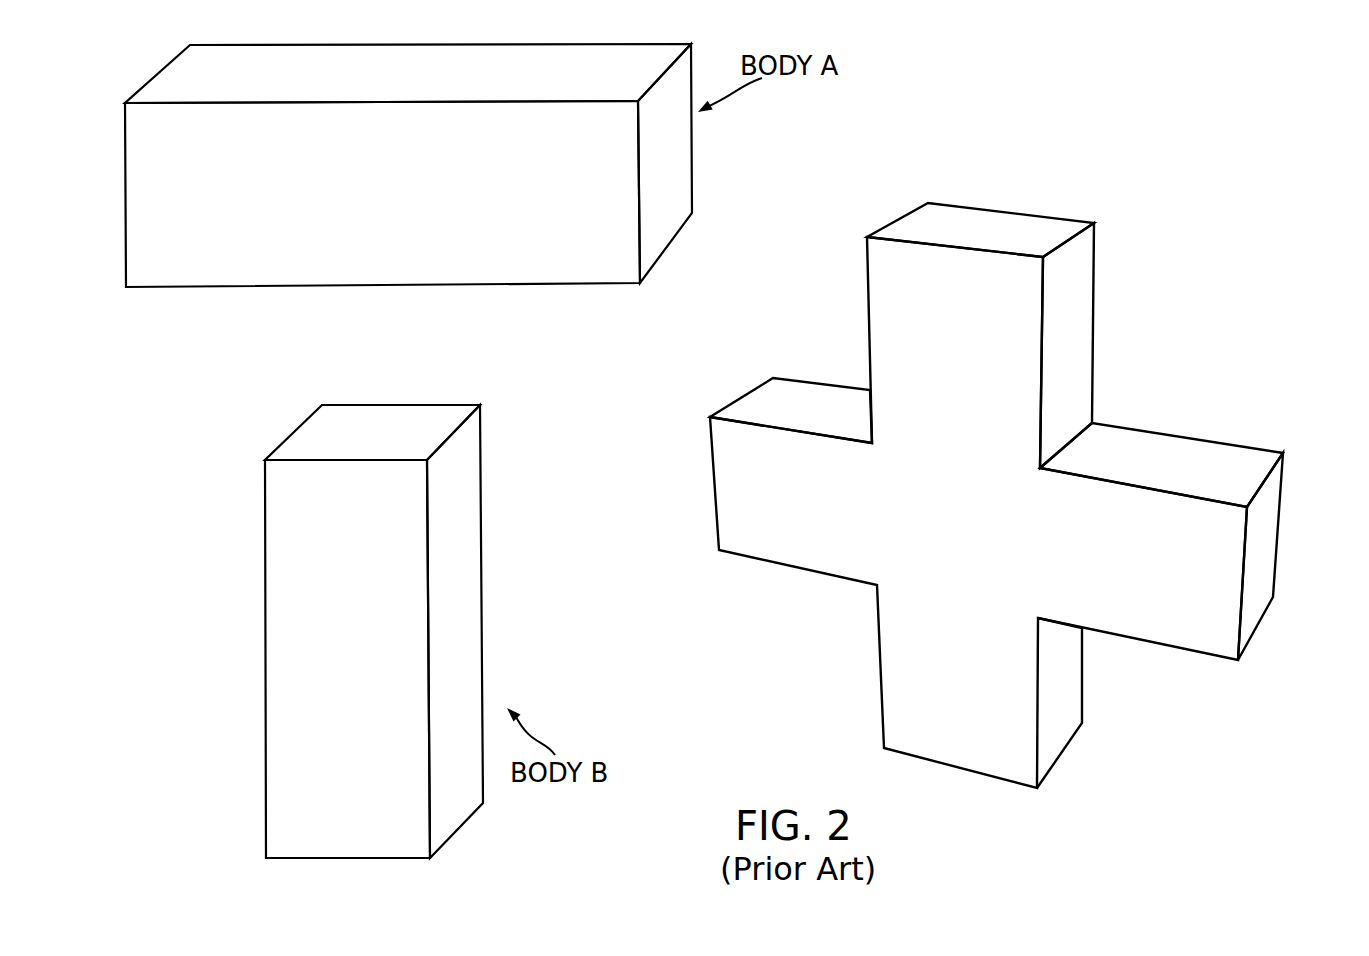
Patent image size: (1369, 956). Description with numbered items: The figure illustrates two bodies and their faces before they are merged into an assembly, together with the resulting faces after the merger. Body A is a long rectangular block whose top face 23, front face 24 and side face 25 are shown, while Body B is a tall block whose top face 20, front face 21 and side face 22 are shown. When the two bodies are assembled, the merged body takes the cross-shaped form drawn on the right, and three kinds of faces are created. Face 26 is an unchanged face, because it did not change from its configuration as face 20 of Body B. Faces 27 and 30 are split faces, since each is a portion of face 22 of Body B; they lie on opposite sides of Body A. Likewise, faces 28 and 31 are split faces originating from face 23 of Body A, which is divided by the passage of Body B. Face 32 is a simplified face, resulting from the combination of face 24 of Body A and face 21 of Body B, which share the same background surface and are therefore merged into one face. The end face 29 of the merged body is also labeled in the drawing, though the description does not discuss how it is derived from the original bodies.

The face of Body B 20 is at (358, 446).
The face of Body B 21 is at (321, 659).
The face of Body B 22 is at (438, 607).
The face of Body A 23 is at (356, 91).
The face of Body A 24 is at (373, 211).
The face of Body A 25 is at (650, 169).
The unchanged face 26 is at (968, 225).
The split face 27 is at (1083, 286).
The split face 28 is at (1160, 454).
The end surface of right arm of cross body 29 is at (1265, 563).
The split face 30 is at (1067, 698).
The split face 31 is at (800, 393).
The simplified face 32 is at (930, 514).